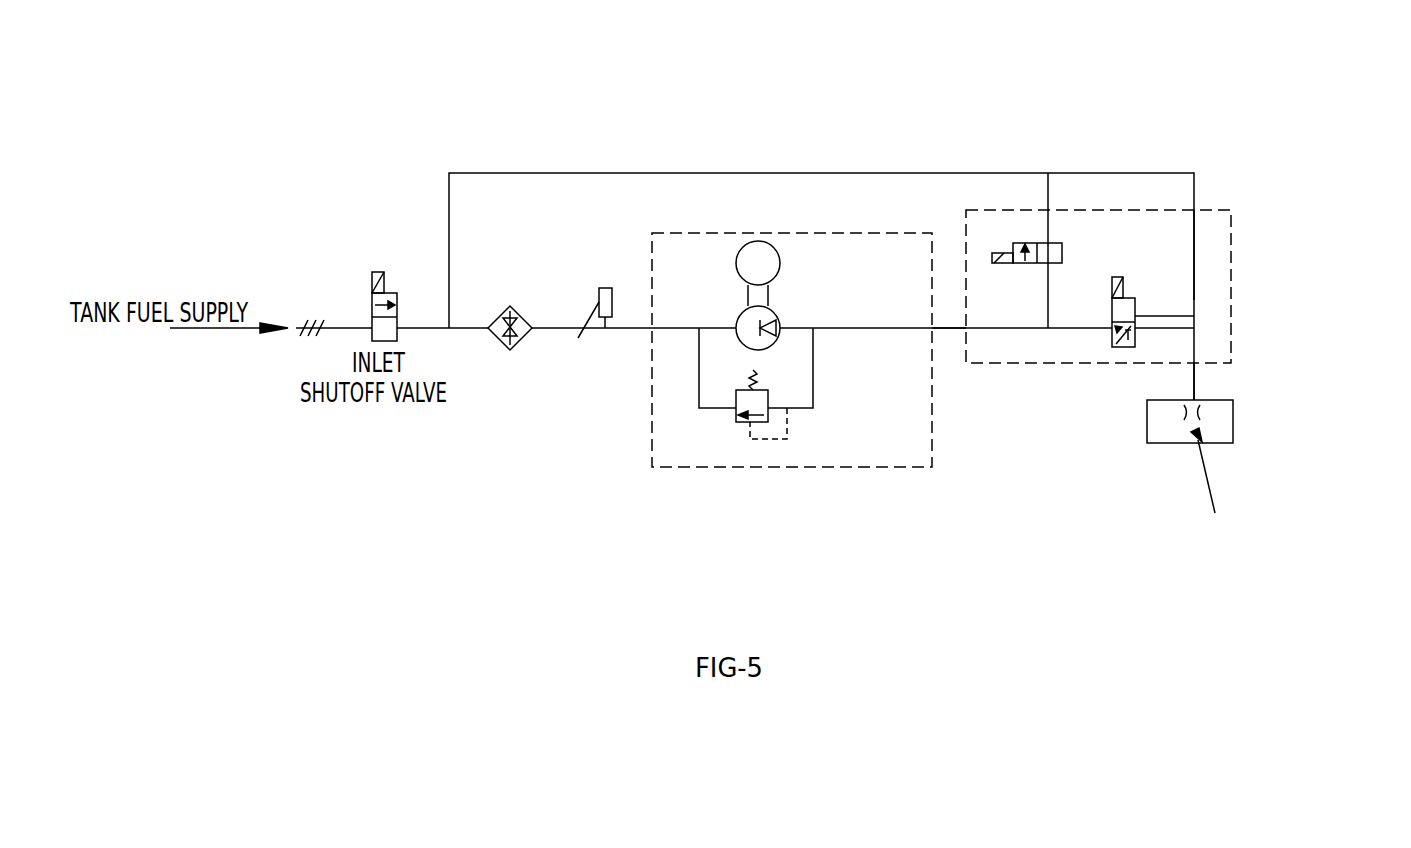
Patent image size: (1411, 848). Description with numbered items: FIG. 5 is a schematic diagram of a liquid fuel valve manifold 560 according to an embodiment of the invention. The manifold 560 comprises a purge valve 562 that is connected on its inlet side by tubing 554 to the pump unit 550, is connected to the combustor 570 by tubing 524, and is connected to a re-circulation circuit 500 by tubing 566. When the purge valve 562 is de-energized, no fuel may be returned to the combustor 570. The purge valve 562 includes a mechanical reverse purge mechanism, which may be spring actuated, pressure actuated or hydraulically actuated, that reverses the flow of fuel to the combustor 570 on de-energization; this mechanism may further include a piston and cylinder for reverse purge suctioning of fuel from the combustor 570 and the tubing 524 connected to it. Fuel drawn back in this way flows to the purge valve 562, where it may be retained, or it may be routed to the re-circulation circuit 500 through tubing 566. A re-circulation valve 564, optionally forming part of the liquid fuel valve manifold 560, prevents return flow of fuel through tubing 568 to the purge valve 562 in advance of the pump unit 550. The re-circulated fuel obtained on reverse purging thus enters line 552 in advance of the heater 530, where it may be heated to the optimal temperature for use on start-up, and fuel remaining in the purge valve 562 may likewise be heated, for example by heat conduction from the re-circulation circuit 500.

The re-circulation circuit 500 is at (821, 271).
The tubing 524 is at (1194, 383).
The heater 530 is at (508, 348).
The pump unit 550 is at (792, 332).
The line 552 is at (630, 328).
The tubing 554 is at (947, 328).
The liquid fuel valve manifold 560 is at (1231, 210).
The purge valve 562 is at (1116, 348).
The re-circulation valve 564 is at (1014, 242).
The tubing 566 is at (1195, 253).
The tubing 568 is at (1050, 192).
The combustor 570 is at (1233, 416).